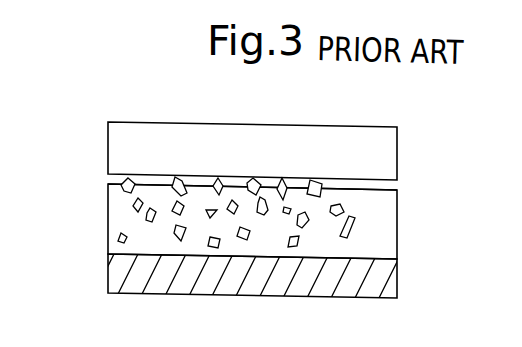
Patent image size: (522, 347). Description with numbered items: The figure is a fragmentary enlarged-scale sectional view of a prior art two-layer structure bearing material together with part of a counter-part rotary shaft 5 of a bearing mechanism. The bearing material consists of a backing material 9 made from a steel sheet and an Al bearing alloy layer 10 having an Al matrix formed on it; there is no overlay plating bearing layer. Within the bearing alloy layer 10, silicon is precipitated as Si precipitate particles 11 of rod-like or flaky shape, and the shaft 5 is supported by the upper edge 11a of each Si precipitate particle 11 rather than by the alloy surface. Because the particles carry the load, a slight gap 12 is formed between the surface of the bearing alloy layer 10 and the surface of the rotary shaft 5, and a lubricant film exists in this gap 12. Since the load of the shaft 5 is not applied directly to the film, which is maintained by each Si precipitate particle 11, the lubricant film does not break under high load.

The rotary shaft 5 is at (302, 142).
The backing material 9 is at (385, 278).
The Al bearing alloy layer 10 is at (388, 223).
The Si precipitate particles 11 is at (178, 178).
The upper edge 11a is at (128, 178).
The gap 12 is at (383, 183).